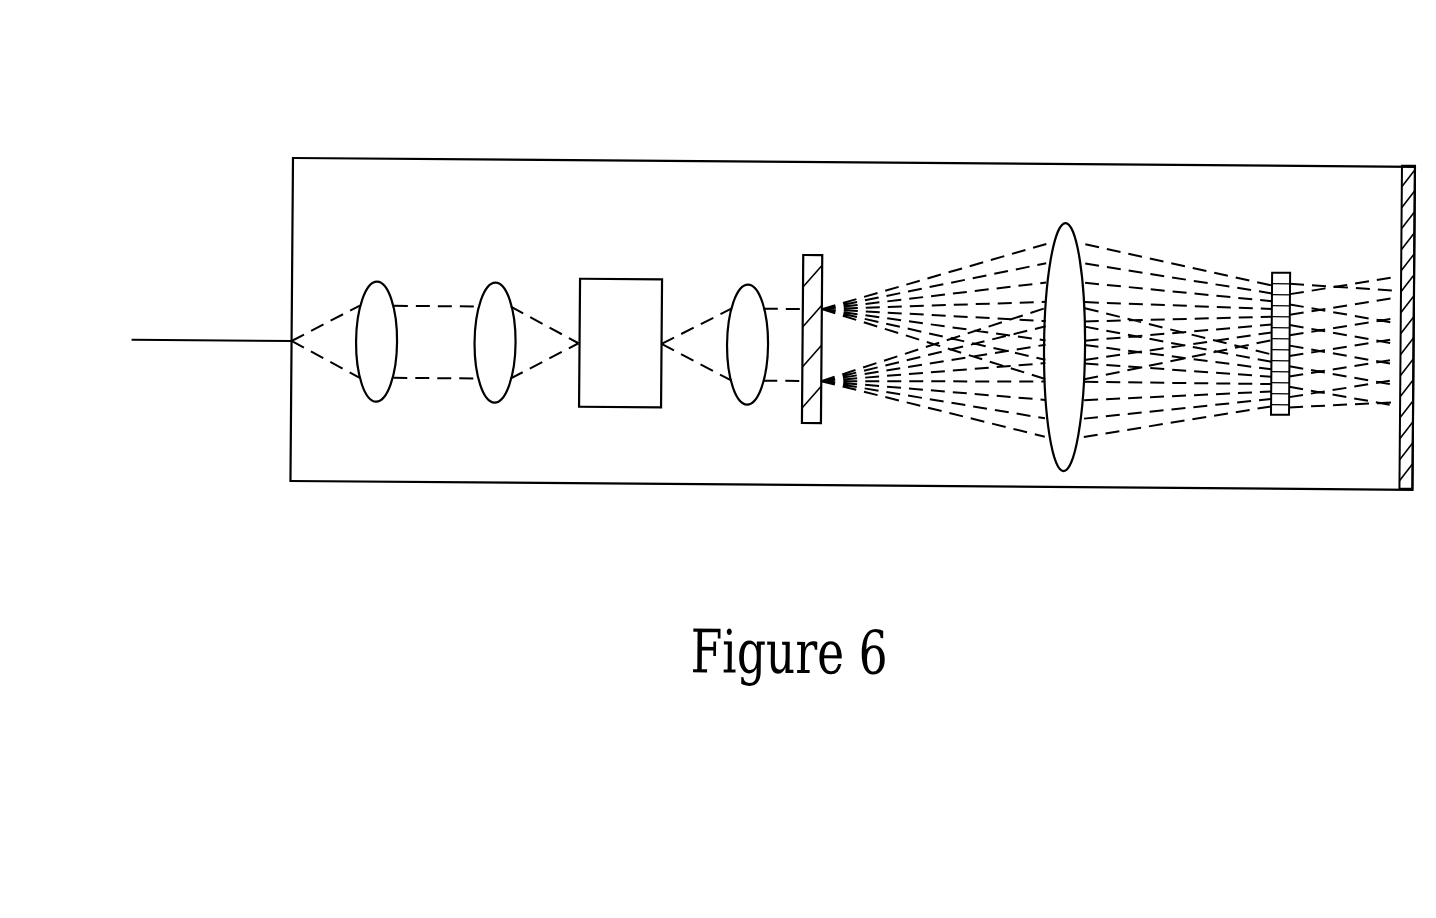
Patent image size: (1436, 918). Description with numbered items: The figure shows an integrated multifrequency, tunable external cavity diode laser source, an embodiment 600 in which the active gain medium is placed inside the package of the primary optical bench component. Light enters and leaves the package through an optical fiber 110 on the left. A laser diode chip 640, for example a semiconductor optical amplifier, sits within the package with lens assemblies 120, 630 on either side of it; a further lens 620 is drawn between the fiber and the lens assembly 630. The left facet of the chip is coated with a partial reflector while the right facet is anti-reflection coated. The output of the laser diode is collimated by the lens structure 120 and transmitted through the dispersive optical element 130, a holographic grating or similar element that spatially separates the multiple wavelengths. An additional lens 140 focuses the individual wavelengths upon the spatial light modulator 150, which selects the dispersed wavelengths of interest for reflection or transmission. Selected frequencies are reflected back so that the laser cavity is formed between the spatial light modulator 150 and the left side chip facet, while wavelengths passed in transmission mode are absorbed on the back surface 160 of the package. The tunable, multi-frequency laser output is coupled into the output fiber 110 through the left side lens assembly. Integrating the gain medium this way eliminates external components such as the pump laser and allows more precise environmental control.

The optical fiber 110 is at (210, 432).
The integrated multifrequency tunable ECDL source embodiment 600 is at (852, 304).
The first lens 620 is at (375, 403).
The lens assembly 630 is at (493, 404).
The laser diode chip 640 is at (620, 403).
The lens structure 120 is at (742, 406).
The dispersive optical element 130 is at (811, 392).
The lens 140 is at (1061, 377).
The spatial light modulator 150 is at (1274, 403).
The back surface 160 is at (1409, 133).